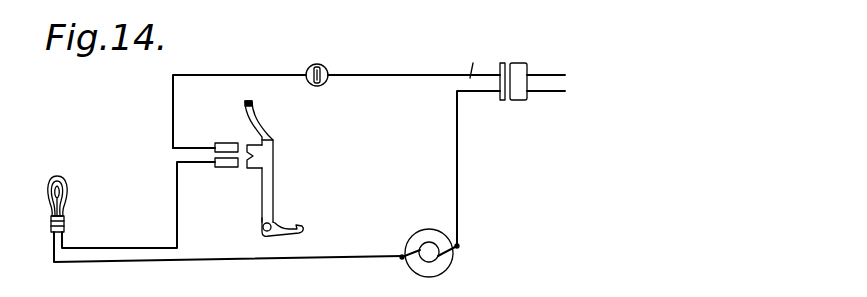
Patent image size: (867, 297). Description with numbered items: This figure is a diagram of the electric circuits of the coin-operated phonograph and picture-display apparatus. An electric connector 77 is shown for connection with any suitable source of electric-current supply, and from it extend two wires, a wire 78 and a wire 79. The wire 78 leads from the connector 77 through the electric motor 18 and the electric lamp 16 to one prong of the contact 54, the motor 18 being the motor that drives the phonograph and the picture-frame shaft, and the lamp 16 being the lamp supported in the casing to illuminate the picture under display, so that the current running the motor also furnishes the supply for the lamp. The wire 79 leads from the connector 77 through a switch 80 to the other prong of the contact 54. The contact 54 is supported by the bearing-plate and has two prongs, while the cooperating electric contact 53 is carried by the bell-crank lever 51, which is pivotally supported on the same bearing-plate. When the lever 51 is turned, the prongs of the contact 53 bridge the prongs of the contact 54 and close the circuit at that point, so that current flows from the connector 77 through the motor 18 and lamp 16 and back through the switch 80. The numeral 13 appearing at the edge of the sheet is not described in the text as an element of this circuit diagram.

The electric lamp 16 is at (60, 194).
The electric motor 18 is at (420, 238).
The bell-crank lever 51 is at (273, 188).
The electric contact 53 is at (253, 170).
The contact 54 is at (223, 143).
The electric connector 77 is at (518, 72).
The wire 78 is at (473, 92).
The wire 79 is at (475, 53).
The switch 80 is at (332, 55).
The unspecified 13 is at (573, 286).